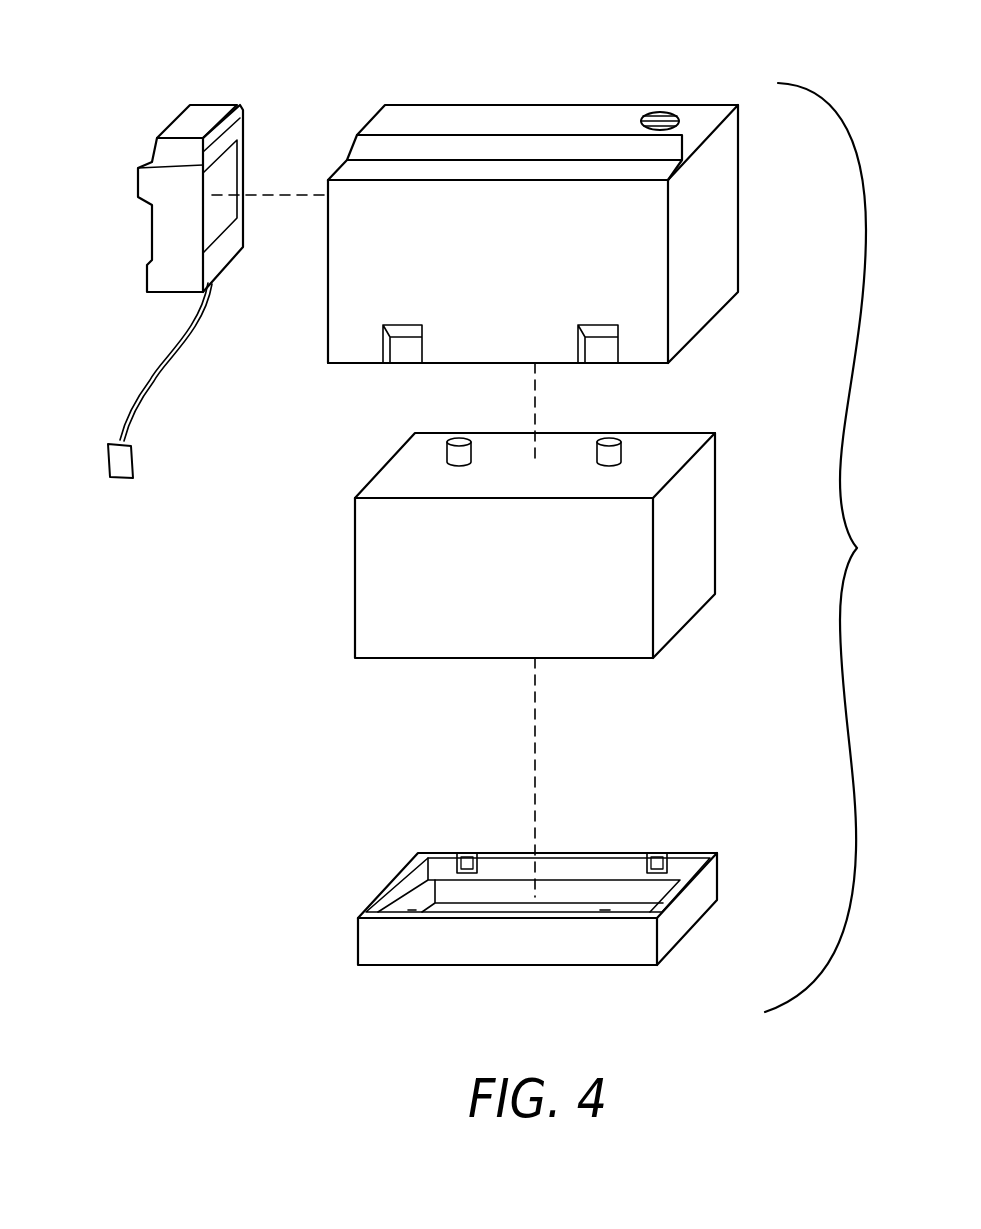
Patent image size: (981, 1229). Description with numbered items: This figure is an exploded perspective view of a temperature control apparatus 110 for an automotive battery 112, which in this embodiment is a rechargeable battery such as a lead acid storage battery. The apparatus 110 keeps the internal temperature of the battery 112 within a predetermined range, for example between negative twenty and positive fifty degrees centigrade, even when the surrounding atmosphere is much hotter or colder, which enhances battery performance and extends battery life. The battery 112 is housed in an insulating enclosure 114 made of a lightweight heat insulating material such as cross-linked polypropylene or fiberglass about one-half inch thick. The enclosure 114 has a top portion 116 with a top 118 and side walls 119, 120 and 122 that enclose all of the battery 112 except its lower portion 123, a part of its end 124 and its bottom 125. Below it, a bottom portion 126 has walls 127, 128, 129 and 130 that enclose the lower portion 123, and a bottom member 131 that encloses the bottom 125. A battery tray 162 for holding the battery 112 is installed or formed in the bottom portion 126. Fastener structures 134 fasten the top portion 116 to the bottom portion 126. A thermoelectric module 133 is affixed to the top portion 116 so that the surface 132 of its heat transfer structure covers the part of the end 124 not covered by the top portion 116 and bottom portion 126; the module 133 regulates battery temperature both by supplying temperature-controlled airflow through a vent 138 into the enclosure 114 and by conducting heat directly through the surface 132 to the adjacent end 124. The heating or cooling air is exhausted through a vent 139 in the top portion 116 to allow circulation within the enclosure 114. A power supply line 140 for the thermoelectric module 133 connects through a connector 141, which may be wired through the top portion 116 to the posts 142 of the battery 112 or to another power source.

The temperature control apparatus 110 is at (185, 33).
The automotive battery 112 is at (531, 548).
The insulating enclosure 114 is at (834, 547).
The top portion 116 is at (564, 463).
The top 118 is at (533, 130).
The side wall 119 is at (725, 247).
The side wall 120 is at (410, 232).
The side wall 122 is at (328, 326).
The lower portion 123 is at (428, 641).
The end 124 is at (343, 588).
The bottom 125 is at (635, 660).
The bottom portion 126 is at (558, 919).
The wall 127 is at (690, 903).
The wall 128 is at (375, 945).
The wall 129 is at (392, 882).
The wall 130 is at (548, 856).
The bottom member 131 is at (601, 967).
The surface of heat transfer structure 132 is at (233, 170).
The thermoelectric module 133 is at (182, 292).
The fastener structures 134 is at (404, 360).
The vent 138 is at (243, 126).
The vent 139 is at (682, 105).
The power supply line 140 is at (165, 367).
The connector 141 is at (135, 462).
The posts 142 is at (458, 438).
The battery tray 162 is at (591, 878).